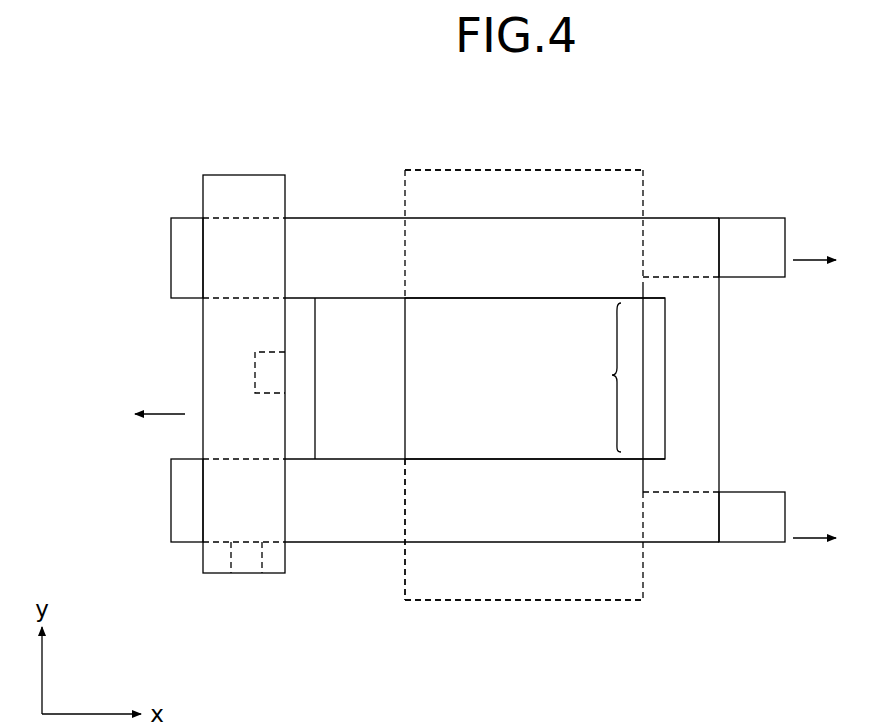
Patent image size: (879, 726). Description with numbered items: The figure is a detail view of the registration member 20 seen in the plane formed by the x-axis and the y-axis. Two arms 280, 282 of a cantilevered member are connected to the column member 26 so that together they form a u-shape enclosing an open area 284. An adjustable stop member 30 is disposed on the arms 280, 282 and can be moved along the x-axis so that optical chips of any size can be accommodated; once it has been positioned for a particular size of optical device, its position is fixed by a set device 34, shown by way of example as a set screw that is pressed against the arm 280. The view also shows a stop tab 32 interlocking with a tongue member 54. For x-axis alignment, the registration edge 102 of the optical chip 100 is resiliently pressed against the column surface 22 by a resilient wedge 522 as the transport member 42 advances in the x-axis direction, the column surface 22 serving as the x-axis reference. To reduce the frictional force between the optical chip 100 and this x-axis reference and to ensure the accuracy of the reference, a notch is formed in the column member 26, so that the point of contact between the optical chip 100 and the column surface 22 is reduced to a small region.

The registration member 20 is at (602, 91).
The column surface 22 is at (643, 289).
The column member 26 is at (708, 337).
The adjustable stop member 30 is at (272, 192).
The stop tab 32 is at (270, 362).
The set device 34 is at (247, 563).
The transport member 42 is at (773, 243).
The tongue member 54 is at (308, 328).
The optical chip 100 is at (638, 575).
The registration edge 102 is at (643, 282).
The arm 280 is at (515, 523).
The arm 282 is at (497, 240).
The open area 284 is at (443, 440).
The resilient wedge 522 is at (385, 352).